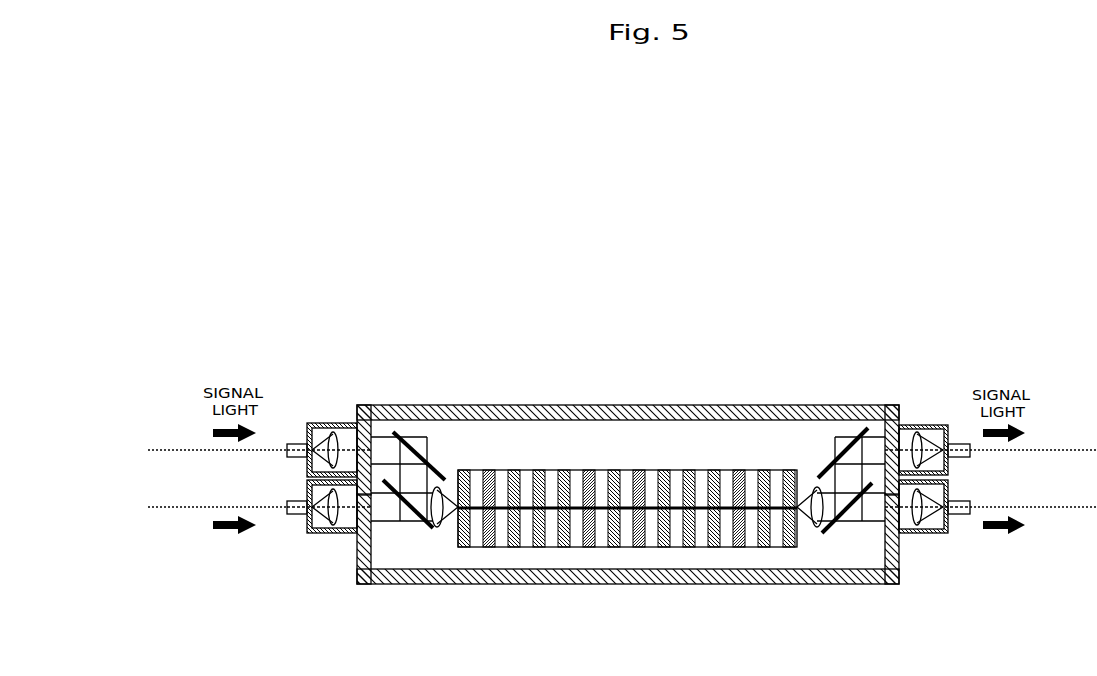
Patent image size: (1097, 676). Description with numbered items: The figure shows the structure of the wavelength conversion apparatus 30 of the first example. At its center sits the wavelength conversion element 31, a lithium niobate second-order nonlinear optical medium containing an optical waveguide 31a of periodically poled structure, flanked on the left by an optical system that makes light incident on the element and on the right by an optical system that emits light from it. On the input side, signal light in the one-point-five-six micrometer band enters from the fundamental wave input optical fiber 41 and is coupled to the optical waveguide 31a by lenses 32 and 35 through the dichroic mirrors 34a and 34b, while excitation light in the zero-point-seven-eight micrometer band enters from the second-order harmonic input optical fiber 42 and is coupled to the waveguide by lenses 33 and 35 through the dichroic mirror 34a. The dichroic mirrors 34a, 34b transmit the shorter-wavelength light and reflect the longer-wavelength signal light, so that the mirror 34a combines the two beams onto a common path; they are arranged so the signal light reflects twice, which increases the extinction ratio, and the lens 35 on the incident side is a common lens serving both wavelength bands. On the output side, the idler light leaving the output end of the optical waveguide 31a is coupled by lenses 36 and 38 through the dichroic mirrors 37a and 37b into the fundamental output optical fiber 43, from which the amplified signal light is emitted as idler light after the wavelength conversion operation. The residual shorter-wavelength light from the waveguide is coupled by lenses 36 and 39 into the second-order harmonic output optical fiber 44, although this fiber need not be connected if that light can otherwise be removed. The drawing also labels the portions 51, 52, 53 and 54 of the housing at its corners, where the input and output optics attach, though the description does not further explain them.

The wavelength conversion apparatus 30 is at (649, 315).
The wavelength conversion element 31 is at (580, 548).
The optical waveguide 31a is at (634, 535).
The lens 32 is at (340, 423).
The lens 33 is at (343, 533).
The dichroic mirror 34a is at (429, 533).
The dichroic mirror 34b is at (420, 435).
The lens 35 is at (443, 528).
The lens 36 is at (814, 528).
The dichroic mirror 37a is at (828, 540).
The dichroic mirror 37b is at (842, 440).
The lens 38 is at (918, 425).
The lens 39 is at (920, 534).
The 1.56-μm band optical fiber 41 is at (172, 447).
The 0.78-μm band optical fiber 42 is at (172, 511).
The 1.56-μm band optical fiber 43 is at (1070, 448).
The 0.78-μm band optical fiber 44 is at (1070, 511).
The housing wall portion 51 is at (363, 407).
The housing wall portion 52 is at (358, 585).
The housing wall portion 53 is at (897, 406).
The housing wall portion 54 is at (890, 584).